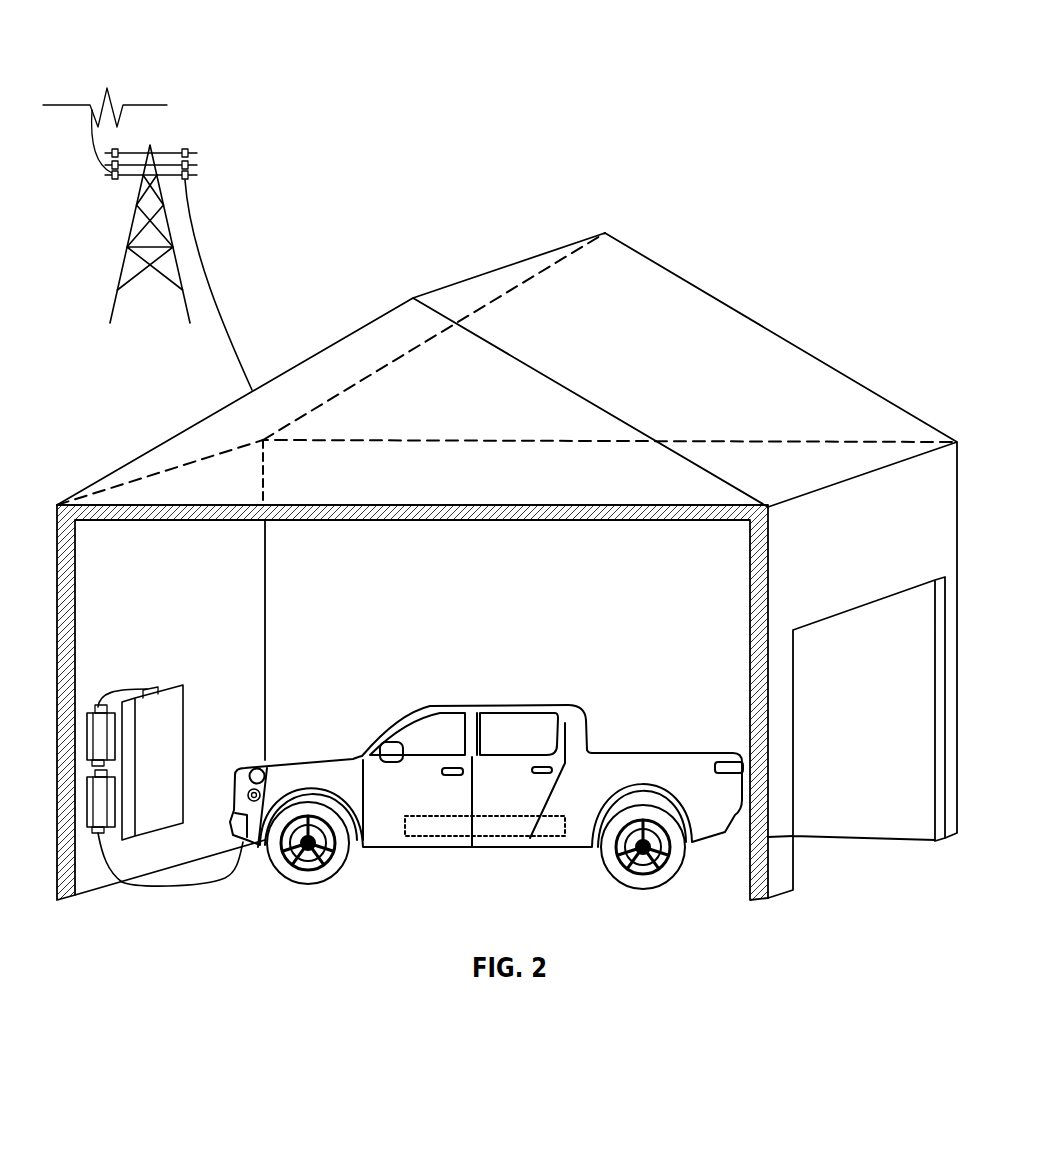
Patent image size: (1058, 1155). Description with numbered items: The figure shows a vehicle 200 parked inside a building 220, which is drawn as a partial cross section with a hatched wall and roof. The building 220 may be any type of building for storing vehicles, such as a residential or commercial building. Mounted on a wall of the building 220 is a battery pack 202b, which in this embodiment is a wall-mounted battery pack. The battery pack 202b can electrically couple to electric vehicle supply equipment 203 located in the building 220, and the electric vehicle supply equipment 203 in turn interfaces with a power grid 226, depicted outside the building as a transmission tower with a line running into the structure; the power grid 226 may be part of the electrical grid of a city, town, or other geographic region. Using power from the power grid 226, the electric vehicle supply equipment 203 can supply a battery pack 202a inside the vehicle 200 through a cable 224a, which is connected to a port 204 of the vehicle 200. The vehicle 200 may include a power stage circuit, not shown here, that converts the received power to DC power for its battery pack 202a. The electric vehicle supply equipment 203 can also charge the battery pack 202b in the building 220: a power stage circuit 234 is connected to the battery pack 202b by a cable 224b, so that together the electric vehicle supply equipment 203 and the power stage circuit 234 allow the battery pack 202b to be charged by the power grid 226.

The vehicle 200 is at (486, 744).
The battery pack 202a is at (405, 820).
The battery pack 202b is at (187, 733).
The electric vehicle supply equipment 203 is at (88, 820).
The port 204 is at (268, 779).
The building 220 is at (787, 340).
The cable 224a is at (243, 850).
The cable 224b is at (147, 688).
The power grid 226 is at (207, 142).
The power stage circuit 234 is at (98, 705).